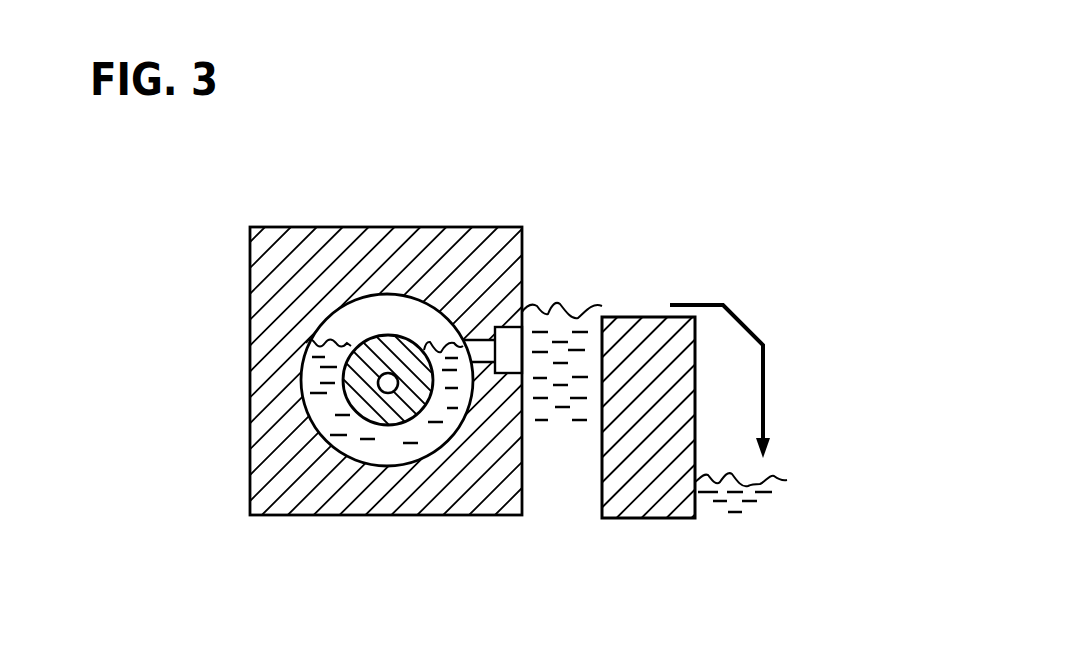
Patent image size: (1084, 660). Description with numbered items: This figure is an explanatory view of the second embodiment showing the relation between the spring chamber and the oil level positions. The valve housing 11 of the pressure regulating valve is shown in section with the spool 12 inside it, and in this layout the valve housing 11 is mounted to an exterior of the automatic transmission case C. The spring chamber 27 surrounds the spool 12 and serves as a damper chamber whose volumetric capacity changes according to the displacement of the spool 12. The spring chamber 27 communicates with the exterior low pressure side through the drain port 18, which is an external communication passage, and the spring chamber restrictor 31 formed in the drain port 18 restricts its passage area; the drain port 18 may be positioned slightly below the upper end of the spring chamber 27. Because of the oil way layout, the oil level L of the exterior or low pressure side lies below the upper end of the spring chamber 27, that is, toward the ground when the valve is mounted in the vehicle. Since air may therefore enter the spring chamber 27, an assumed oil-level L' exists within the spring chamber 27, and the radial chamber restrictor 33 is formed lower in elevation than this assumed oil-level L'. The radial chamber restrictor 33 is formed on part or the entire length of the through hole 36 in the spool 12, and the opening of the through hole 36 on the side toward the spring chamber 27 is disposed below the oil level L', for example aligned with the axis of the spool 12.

The valve housing 11 is at (267, 420).
The spool 12 is at (357, 402).
The spring chamber 27 is at (357, 313).
The spring chamber restrictor 31 is at (482, 342).
The drain port 18 is at (512, 338).
The radial chamber restrictor 33 is at (388, 390).
The through hole 36 is at (409, 474).
The oil level L is at (562, 338).
The assumed oil-level L' is at (325, 361).
The automatic transmission case C is at (650, 498).